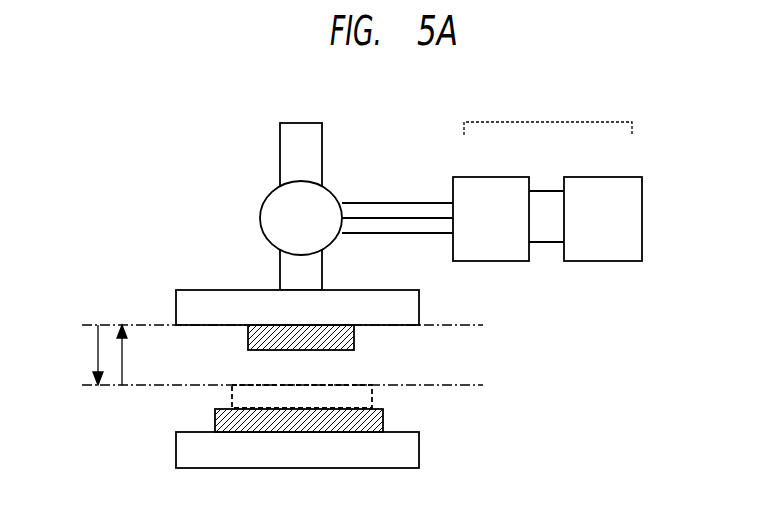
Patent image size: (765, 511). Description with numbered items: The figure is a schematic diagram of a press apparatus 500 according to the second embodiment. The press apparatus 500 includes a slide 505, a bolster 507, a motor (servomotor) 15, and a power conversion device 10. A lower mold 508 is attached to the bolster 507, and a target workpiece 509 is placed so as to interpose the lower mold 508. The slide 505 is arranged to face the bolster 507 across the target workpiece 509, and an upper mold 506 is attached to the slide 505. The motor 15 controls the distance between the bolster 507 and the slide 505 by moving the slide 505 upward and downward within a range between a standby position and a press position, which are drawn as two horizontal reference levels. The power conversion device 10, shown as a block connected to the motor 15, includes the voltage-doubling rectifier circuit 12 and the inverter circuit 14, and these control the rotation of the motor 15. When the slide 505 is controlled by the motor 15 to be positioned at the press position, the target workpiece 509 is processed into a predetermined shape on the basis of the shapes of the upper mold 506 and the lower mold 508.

The press apparatus 500 is at (138, 168).
The motor (servomotor) 15 is at (260, 218).
The power conversion device 10 is at (548, 122).
The inverter circuit 14 is at (480, 177).
The voltage-doubling rectifier circuit 12 is at (601, 177).
The slide 505 is at (176, 305).
The upper mold 506 is at (355, 343).
The target workpiece 509 is at (232, 395).
The lower mold 508 is at (383, 415).
The bolster 507 is at (176, 455).